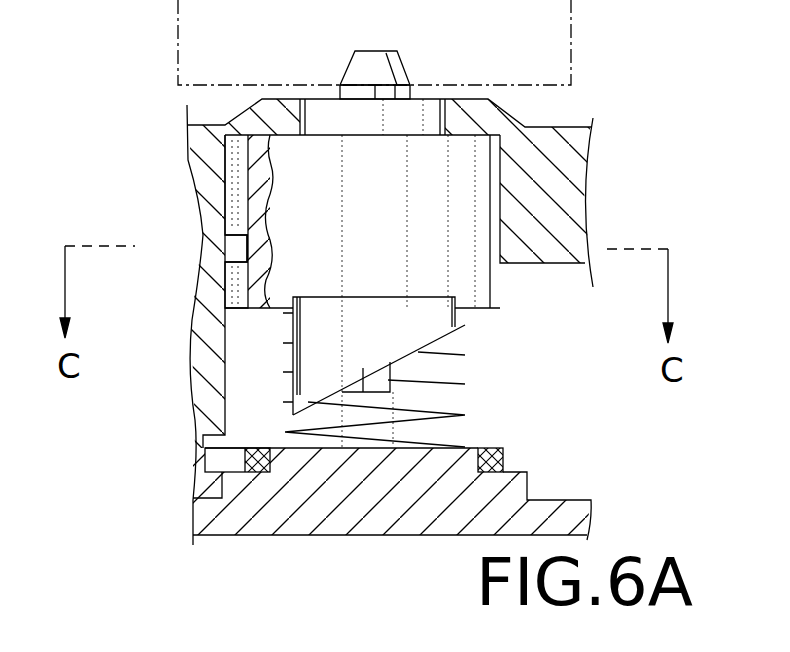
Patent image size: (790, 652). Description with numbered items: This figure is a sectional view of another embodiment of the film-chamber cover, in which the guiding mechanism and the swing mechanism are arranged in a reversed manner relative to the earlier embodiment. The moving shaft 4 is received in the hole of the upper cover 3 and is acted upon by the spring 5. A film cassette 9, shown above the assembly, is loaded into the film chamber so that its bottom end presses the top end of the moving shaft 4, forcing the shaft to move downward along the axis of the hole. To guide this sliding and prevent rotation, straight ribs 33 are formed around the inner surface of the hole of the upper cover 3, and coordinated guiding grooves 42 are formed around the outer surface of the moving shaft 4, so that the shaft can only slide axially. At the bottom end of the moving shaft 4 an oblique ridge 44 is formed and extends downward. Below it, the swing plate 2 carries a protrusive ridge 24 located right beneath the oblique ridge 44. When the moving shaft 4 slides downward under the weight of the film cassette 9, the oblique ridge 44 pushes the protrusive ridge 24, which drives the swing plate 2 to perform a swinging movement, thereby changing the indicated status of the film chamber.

The swing plate 2 is at (496, 462).
The upper cover 3 is at (207, 353).
The moving shaft 4 is at (392, 63).
The spring 5 is at (445, 357).
The film cassette 9 is at (560, 73).
The protrusive ridge 24 is at (355, 432).
The straight ribs 33 is at (233, 250).
The guiding grooves 42 is at (238, 217).
The oblique ridge 44 is at (420, 345).